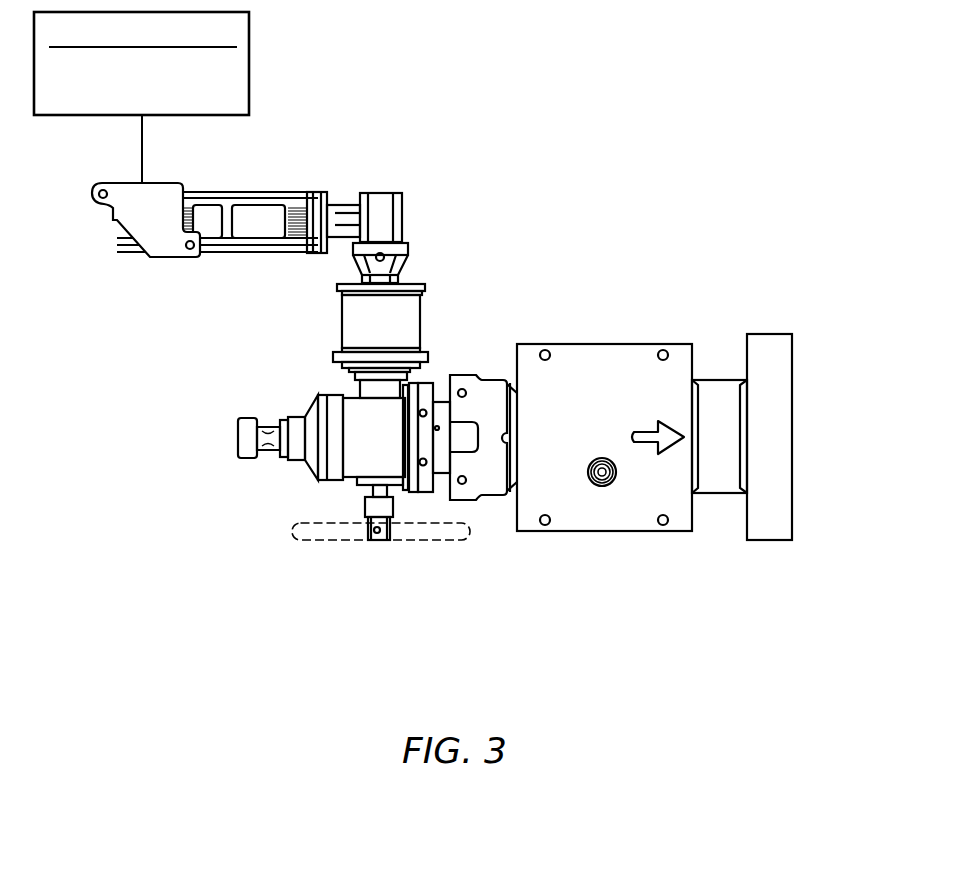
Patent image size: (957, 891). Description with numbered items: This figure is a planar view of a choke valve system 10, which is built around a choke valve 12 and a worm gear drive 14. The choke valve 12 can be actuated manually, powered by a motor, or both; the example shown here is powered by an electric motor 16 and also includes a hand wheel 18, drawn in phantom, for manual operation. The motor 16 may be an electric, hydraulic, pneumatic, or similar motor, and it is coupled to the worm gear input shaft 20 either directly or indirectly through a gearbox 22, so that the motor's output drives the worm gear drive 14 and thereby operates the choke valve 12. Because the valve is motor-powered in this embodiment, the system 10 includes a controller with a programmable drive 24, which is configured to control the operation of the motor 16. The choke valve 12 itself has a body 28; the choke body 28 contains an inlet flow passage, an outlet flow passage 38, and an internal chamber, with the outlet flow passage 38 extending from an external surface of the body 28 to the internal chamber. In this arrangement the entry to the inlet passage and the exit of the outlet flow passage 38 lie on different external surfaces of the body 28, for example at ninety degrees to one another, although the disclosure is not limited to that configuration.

The choke valve system 10 is at (712, 150).
The choke valve 12 is at (657, 537).
The worm gear drive 14 is at (332, 484).
The motor 16 is at (218, 258).
The hand wheel 18 is at (323, 539).
The worm gear input shaft 20 is at (378, 541).
The gearbox 22 is at (407, 242).
The programmable drive 24 is at (249, 68).
The body 28 is at (575, 531).
The outlet flow passage 38 is at (792, 411).